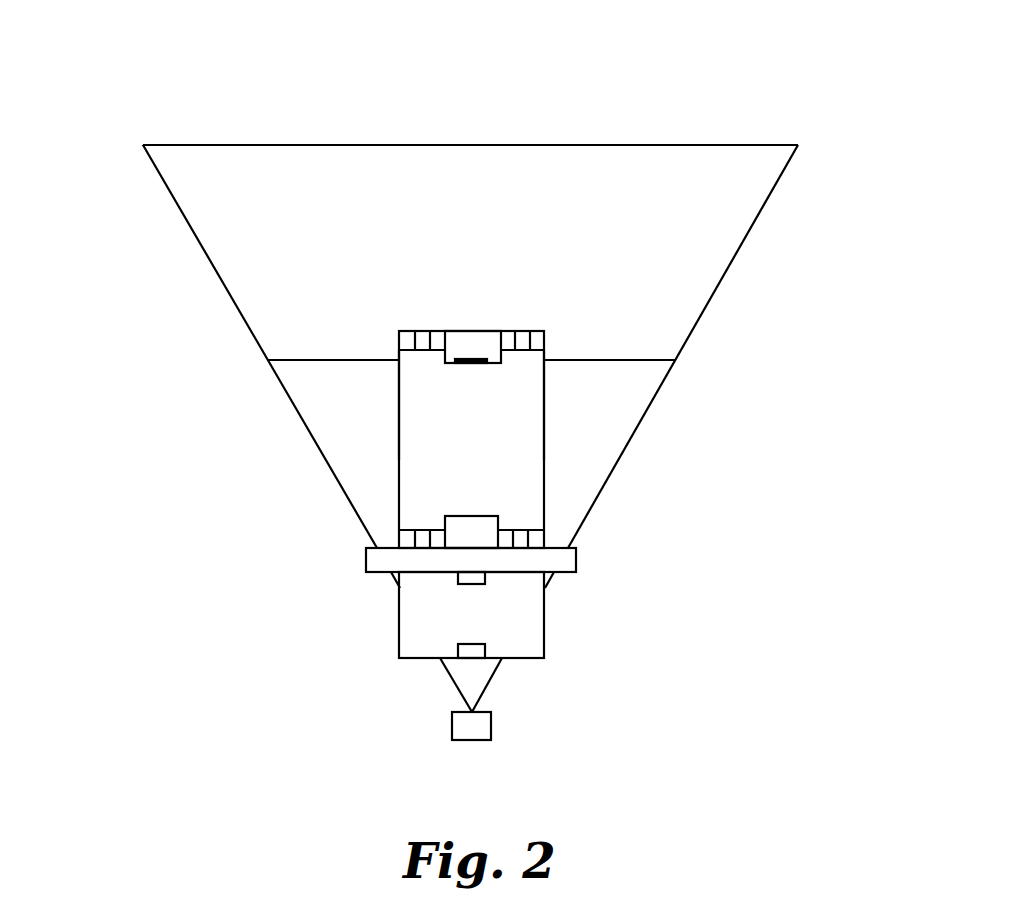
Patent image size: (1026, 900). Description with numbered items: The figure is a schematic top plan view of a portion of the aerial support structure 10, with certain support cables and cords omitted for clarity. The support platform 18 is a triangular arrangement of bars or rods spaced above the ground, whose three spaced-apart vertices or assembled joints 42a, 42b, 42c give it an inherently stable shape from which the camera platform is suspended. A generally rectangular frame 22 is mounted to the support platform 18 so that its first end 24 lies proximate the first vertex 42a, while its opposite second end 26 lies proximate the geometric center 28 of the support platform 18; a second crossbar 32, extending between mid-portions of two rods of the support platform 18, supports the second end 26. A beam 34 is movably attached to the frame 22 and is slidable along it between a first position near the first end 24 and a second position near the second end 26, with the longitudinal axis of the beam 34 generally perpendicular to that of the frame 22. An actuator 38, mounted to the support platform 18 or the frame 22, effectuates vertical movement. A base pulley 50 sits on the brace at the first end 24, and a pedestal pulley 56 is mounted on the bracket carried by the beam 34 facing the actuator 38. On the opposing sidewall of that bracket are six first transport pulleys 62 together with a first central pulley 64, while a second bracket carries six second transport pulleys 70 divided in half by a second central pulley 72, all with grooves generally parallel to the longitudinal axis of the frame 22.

The aerial support structure 10 is at (532, 112).
The support platform 18 is at (227, 290).
The frame 22 is at (544, 452).
The first end 24 is at (547, 613).
The second end 26 is at (544, 374).
The geometric center 28 is at (476, 330).
The second crossbar 32 is at (638, 360).
The beam 34 is at (383, 557).
The actuator 38 is at (452, 722).
The first vertex 42a is at (472, 712).
The second vertex 42b is at (798, 145).
The third vertex 42c is at (143, 145).
The base pulley 50 is at (470, 650).
The pedestal pulley 56 is at (470, 577).
The first transport pulley 62 is at (540, 537).
The first central pulley 64 is at (482, 530).
The second transport pulley 70 is at (410, 342).
The second central pulley 72 is at (471, 350).